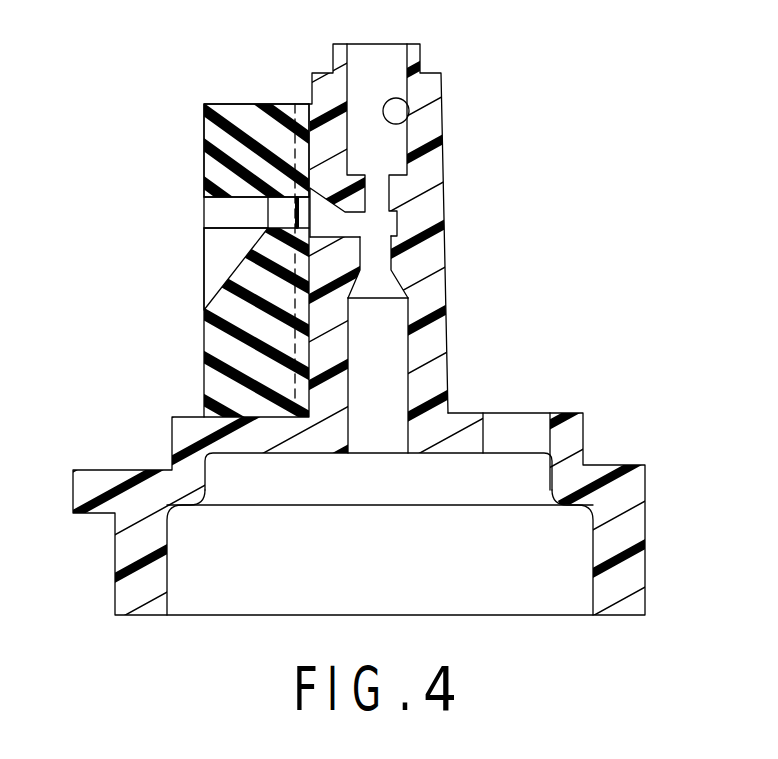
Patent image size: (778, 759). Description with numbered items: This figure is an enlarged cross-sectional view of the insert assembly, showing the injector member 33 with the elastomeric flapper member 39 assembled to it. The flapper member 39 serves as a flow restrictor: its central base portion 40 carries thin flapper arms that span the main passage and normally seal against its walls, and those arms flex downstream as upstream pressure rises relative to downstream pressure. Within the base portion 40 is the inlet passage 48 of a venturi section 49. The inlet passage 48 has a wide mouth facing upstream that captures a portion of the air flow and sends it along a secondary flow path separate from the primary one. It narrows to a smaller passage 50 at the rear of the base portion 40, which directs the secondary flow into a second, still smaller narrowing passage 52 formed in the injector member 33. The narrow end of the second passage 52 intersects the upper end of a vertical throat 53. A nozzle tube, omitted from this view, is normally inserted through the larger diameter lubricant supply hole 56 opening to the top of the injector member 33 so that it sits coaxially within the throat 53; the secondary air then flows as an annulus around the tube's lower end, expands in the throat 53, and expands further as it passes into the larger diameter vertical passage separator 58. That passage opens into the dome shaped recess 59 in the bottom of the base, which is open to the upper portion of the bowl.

The injector member 33 is at (465, 326).
The flapper member 39 is at (188, 143).
The central base portion 40 is at (250, 118).
The inlet passage 48 is at (228, 250).
The venturi section 49 is at (432, 191).
The smaller passage 50 is at (277, 213).
The second narrowing passage 52 is at (330, 222).
The vertical throat 53 is at (392, 258).
The lubricant supply hole 56 is at (404, 108).
The vertical passage separator 58 is at (382, 405).
The dome shaped recess 59 is at (533, 587).